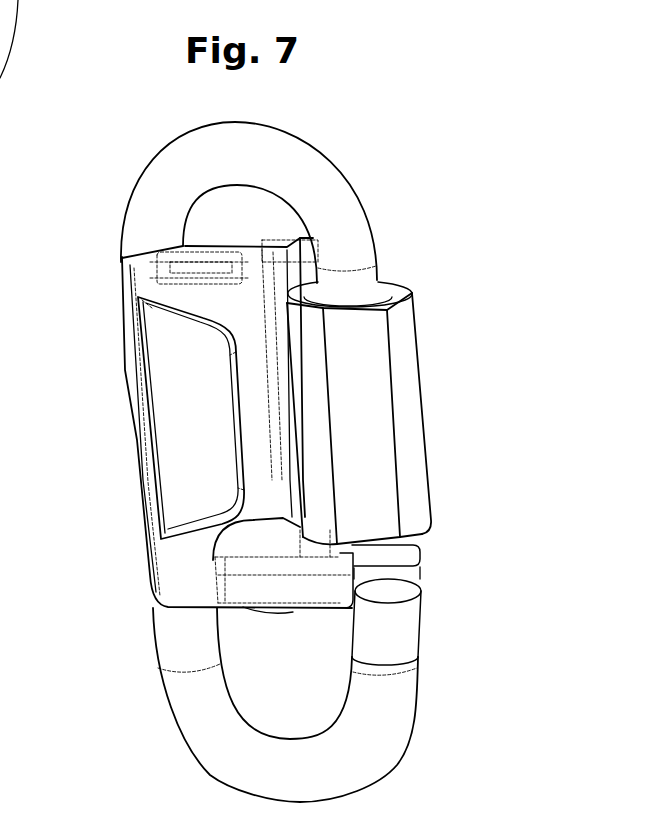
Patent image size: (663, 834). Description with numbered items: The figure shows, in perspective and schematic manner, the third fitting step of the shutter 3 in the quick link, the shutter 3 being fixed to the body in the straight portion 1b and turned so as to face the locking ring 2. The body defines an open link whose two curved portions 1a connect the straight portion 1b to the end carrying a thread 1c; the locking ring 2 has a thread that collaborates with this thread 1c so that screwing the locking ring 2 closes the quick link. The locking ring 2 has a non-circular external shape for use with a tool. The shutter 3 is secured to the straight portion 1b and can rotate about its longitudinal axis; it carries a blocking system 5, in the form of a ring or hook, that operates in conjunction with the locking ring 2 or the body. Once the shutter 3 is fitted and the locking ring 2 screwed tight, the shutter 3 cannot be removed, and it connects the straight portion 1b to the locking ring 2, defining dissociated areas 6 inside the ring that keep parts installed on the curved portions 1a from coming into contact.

The curved portion 1a is at (272, 173).
The straight portion 1b is at (163, 623).
The thread 1c is at (248, 512).
The locking ring 2 is at (350, 355).
The shutter 3 is at (183, 372).
The blocking system 5 is at (371, 567).
The dissociated area 6 is at (228, 204).